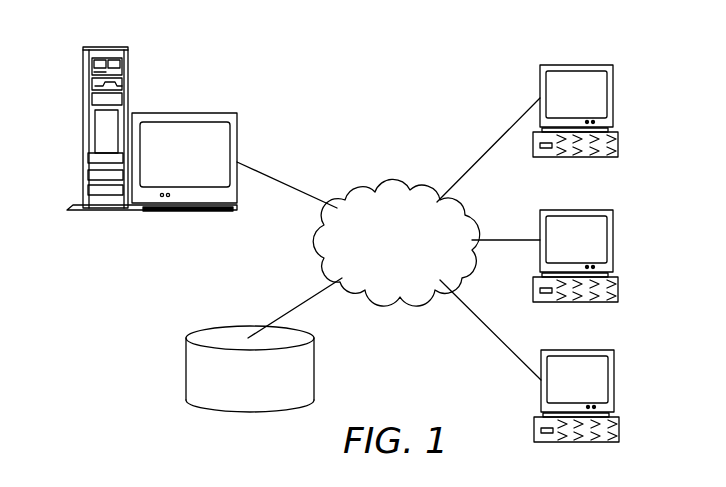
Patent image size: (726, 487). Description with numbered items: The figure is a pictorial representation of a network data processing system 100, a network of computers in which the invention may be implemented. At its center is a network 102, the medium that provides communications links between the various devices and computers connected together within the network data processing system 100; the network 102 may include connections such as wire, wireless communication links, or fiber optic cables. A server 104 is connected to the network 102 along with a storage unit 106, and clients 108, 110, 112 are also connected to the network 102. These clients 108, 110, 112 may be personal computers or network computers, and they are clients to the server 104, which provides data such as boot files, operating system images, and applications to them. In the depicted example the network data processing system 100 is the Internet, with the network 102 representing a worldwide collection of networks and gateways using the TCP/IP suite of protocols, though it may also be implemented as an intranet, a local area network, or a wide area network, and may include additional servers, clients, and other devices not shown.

The network data processing system 100 is at (471, 73).
The network 102 is at (368, 192).
The server 104 is at (82, 131).
The storage unit 106 is at (186, 368).
The client 108 is at (613, 95).
The client 110 is at (613, 240).
The client 112 is at (614, 380).